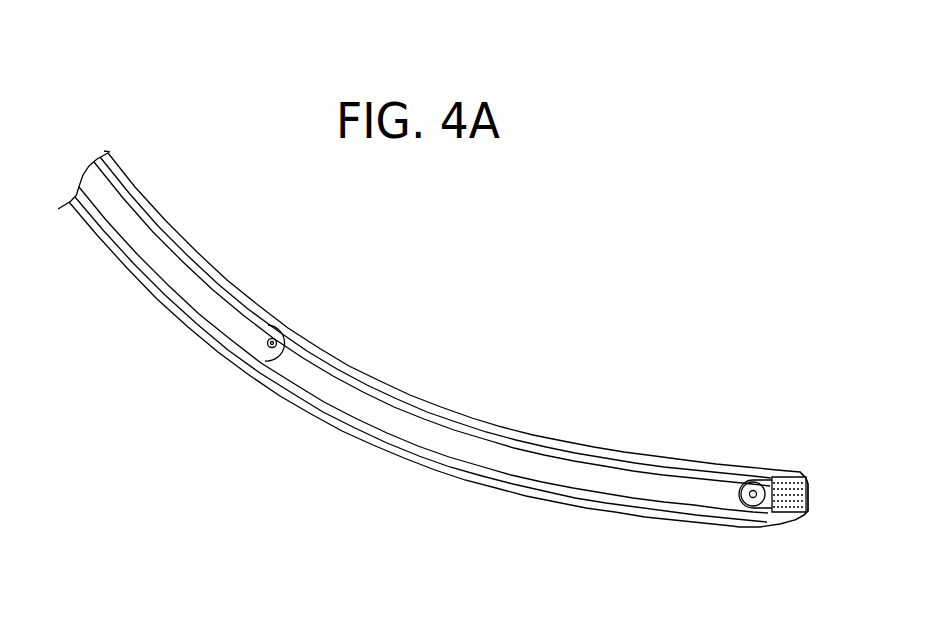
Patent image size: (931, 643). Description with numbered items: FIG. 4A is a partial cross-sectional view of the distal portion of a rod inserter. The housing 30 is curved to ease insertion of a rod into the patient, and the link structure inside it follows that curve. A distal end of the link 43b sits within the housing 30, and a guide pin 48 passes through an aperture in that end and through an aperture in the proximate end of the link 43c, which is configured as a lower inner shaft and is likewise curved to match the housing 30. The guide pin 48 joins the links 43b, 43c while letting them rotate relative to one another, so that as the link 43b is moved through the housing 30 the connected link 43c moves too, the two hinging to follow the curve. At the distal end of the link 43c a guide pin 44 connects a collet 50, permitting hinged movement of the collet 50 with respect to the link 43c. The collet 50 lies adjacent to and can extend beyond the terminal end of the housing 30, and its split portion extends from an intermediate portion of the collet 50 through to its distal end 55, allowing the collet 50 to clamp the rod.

The housing 30 is at (200, 331).
The link 43b is at (197, 282).
The link 43c is at (476, 445).
The guide pin 44 is at (762, 484).
The guide pin 48 is at (270, 325).
The collet 50 is at (808, 482).
The distal end 55 is at (806, 517).